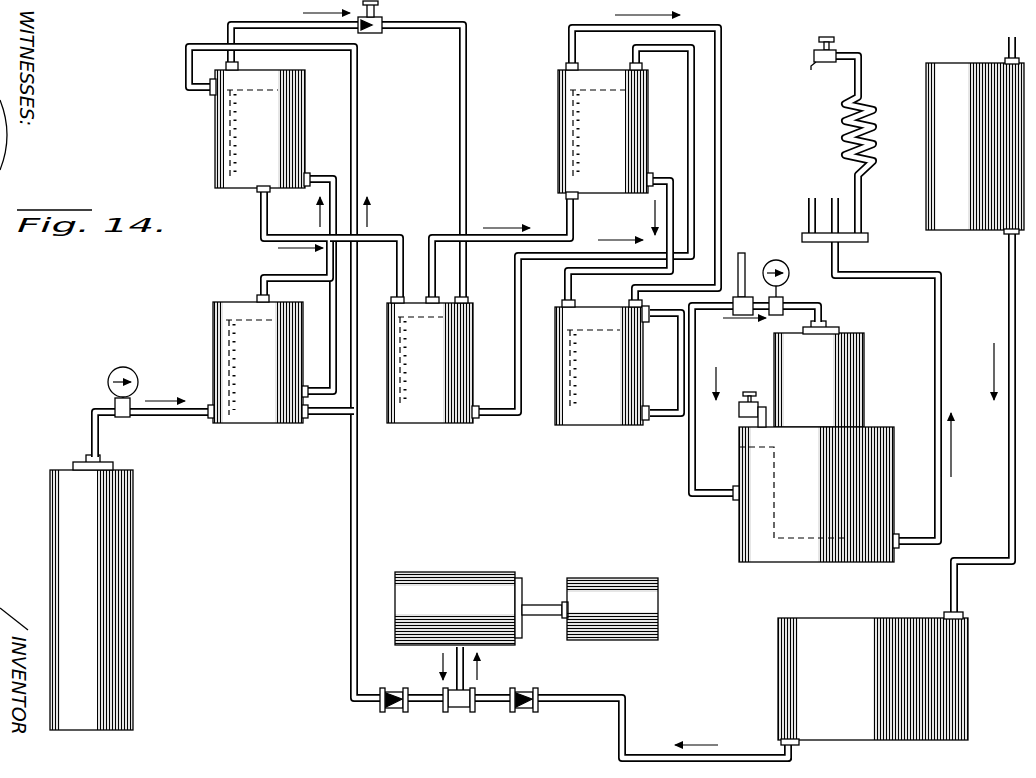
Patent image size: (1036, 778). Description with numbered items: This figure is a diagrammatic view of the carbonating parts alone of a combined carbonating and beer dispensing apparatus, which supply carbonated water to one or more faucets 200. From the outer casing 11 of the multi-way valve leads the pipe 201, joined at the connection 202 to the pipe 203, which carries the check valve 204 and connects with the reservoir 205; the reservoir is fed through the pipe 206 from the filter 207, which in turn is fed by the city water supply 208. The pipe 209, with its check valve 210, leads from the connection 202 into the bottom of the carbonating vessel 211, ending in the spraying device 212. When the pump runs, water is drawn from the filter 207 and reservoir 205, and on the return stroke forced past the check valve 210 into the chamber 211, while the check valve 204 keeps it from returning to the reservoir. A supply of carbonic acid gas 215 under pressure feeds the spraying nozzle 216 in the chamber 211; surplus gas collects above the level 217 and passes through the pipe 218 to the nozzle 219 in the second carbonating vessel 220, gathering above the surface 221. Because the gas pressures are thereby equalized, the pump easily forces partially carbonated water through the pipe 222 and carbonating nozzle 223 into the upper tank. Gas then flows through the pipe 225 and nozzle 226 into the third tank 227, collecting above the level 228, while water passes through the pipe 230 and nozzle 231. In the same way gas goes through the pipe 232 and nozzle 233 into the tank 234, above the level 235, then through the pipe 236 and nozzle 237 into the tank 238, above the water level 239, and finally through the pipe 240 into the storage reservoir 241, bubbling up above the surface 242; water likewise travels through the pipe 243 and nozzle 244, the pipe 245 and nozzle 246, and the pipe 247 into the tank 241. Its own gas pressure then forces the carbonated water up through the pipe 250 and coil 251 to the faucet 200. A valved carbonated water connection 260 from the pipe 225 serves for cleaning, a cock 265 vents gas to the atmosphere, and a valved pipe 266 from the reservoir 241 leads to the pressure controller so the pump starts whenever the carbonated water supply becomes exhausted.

The outer casing 11 is at (445, 578).
The faucet 200 is at (845, 50).
The pipe 201 is at (450, 648).
The connection 202 is at (467, 706).
The pipe 203 is at (739, 753).
The check valve 204 is at (524, 696).
The reservoir 205 is at (949, 683).
The pipe 206 is at (1006, 289).
The filter 207 is at (975, 146).
The city water supply 208 is at (1008, 45).
The pipe 209 is at (352, 543).
The check valve 210 is at (390, 706).
The carbonating vessel 211 is at (253, 410).
The spraying device 212 is at (296, 348).
The supply of carbonic acid gas 215 is at (112, 552).
The spraying nozzle 216 is at (220, 340).
The level 217 is at (242, 320).
The pipe 218 is at (300, 279).
The nozzle 219 is at (303, 122).
The second carbonating vessel 220 is at (247, 180).
The surface 221 is at (258, 90).
The pipe 222 is at (364, 160).
The carbonating nozzle 223 is at (215, 120).
The pipe 225 is at (405, 27).
The nozzle 226 is at (485, 295).
The third carbonating tank 227 is at (437, 412).
The level 228 is at (401, 295).
The pipe 230 is at (383, 238).
The nozzle 231 is at (424, 361).
The pipe 232 is at (479, 232).
The nozzle 233 is at (560, 130).
The tank 234 is at (610, 180).
The level 235 is at (598, 90).
The pipe 236 is at (590, 27).
The nozzle 237 is at (651, 366).
The tank 238 is at (598, 415).
The water level 239 is at (597, 318).
The pipe 240 is at (708, 410).
The storage reservoir 241 is at (747, 437).
The surface 242 is at (752, 407).
The pipe 243 is at (497, 413).
The nozzle 244 is at (633, 137).
The pipe 245 is at (666, 198).
The nozzle 246 is at (565, 352).
The pipe 247 is at (667, 418).
The pipe 250 is at (940, 372).
The coil 251 is at (874, 160).
The valved carbonated water connection 260 is at (373, 14).
The cock 265 is at (819, 374).
The valved pipe 266 is at (745, 268).